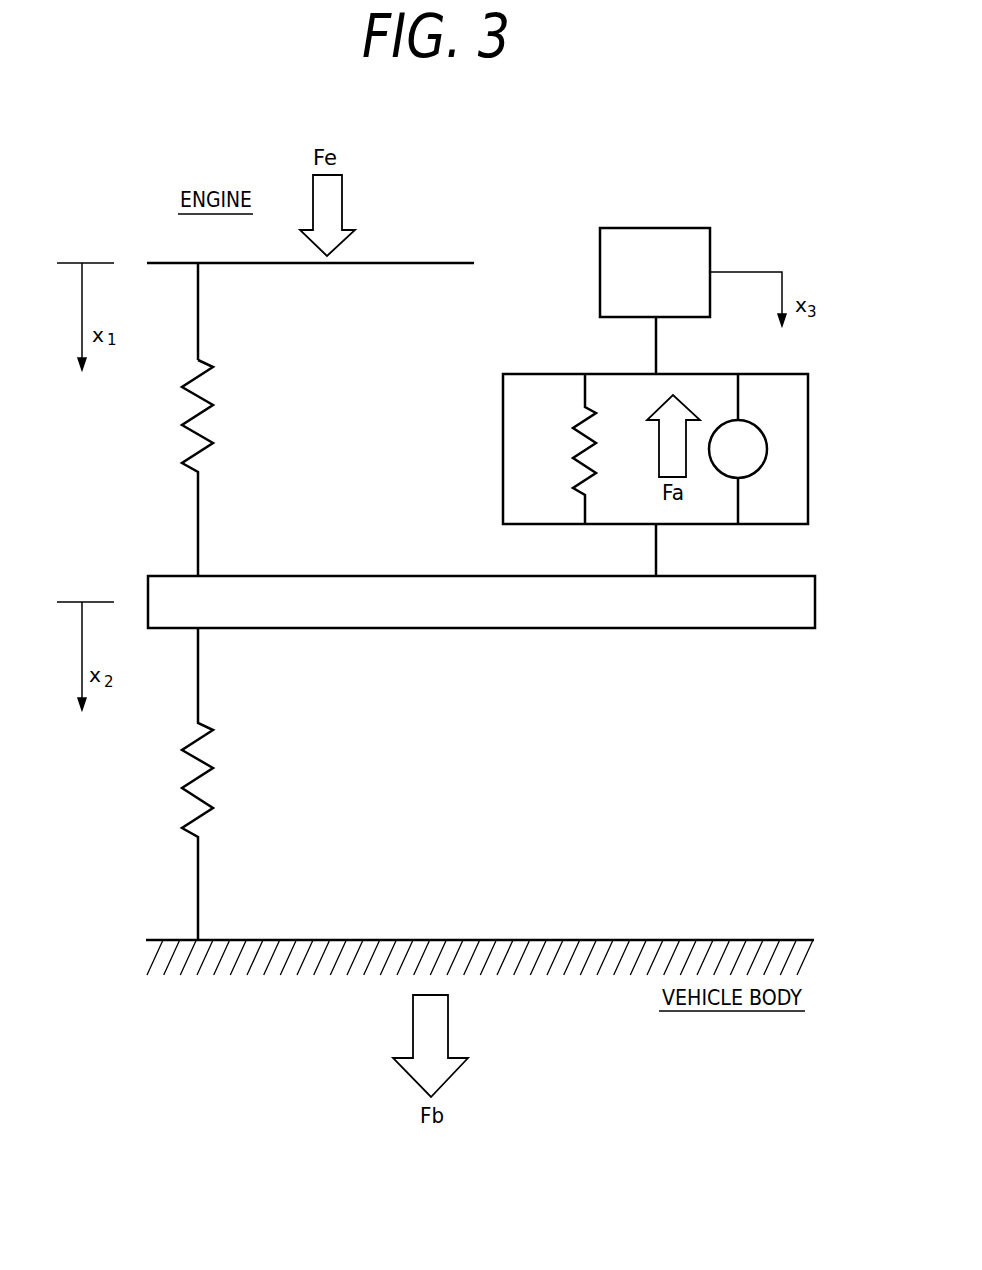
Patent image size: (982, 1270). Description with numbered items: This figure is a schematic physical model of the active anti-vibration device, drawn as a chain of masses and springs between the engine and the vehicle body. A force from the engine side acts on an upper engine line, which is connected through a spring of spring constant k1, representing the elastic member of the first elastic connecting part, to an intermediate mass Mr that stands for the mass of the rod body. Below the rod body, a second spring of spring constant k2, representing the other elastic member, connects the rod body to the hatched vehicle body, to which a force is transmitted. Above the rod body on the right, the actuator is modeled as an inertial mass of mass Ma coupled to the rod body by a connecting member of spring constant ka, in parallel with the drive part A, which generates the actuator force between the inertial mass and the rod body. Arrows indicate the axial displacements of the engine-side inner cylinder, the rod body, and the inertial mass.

The mass of the inertial mass Ma is at (655, 272).
The mass of the rod body Mr is at (481, 602).
The spring constant of the connecting member ka is at (568, 449).
The spring constant of the elastic member k1 is at (215, 467).
The spring constant of the elastic member k2 is at (214, 784).
The drive part A is at (738, 449).